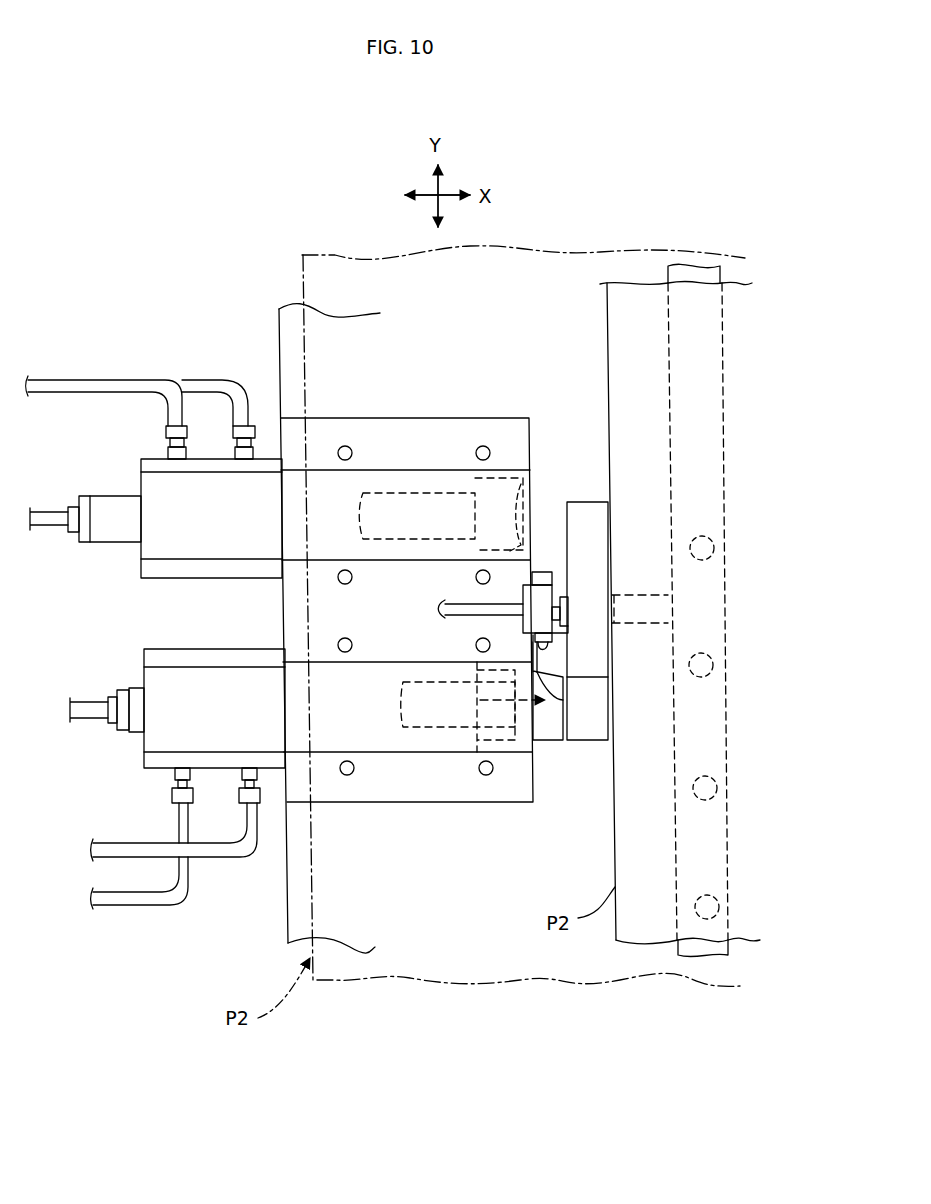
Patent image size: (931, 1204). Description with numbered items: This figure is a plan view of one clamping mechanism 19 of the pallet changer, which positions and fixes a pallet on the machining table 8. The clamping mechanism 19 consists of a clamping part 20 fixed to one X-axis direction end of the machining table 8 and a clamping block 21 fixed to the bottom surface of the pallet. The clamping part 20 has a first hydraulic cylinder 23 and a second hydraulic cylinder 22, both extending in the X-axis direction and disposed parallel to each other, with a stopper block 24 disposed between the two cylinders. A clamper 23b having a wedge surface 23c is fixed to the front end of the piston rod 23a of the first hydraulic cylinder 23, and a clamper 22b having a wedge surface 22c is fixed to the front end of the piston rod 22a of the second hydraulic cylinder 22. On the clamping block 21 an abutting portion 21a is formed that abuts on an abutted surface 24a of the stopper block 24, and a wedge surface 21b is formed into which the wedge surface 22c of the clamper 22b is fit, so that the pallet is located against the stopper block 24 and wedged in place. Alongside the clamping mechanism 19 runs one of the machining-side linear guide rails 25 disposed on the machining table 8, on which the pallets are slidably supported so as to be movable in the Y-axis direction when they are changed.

The machining table 8 is at (270, 335).
The clamping mechanism 19 is at (563, 392).
The clamping part 20 is at (405, 803).
The clamping block 21 is at (613, 727).
The abutting portion 21a is at (556, 640).
The wedge surface 21b is at (567, 690).
The second hydraulic cylinder 22 is at (460, 754).
The piston rod 22a is at (488, 727).
The clamper 22b is at (553, 742).
The wedge surface 22c is at (548, 673).
The first hydraulic cylinder 23 is at (442, 468).
The piston rod 23a is at (397, 493).
The clamper 23b is at (497, 478).
The wedge surface 23c is at (532, 480).
The stopper block 24 is at (520, 594).
The abutted surface 24a is at (543, 573).
The machining-side linear guide rail 25 is at (727, 723).